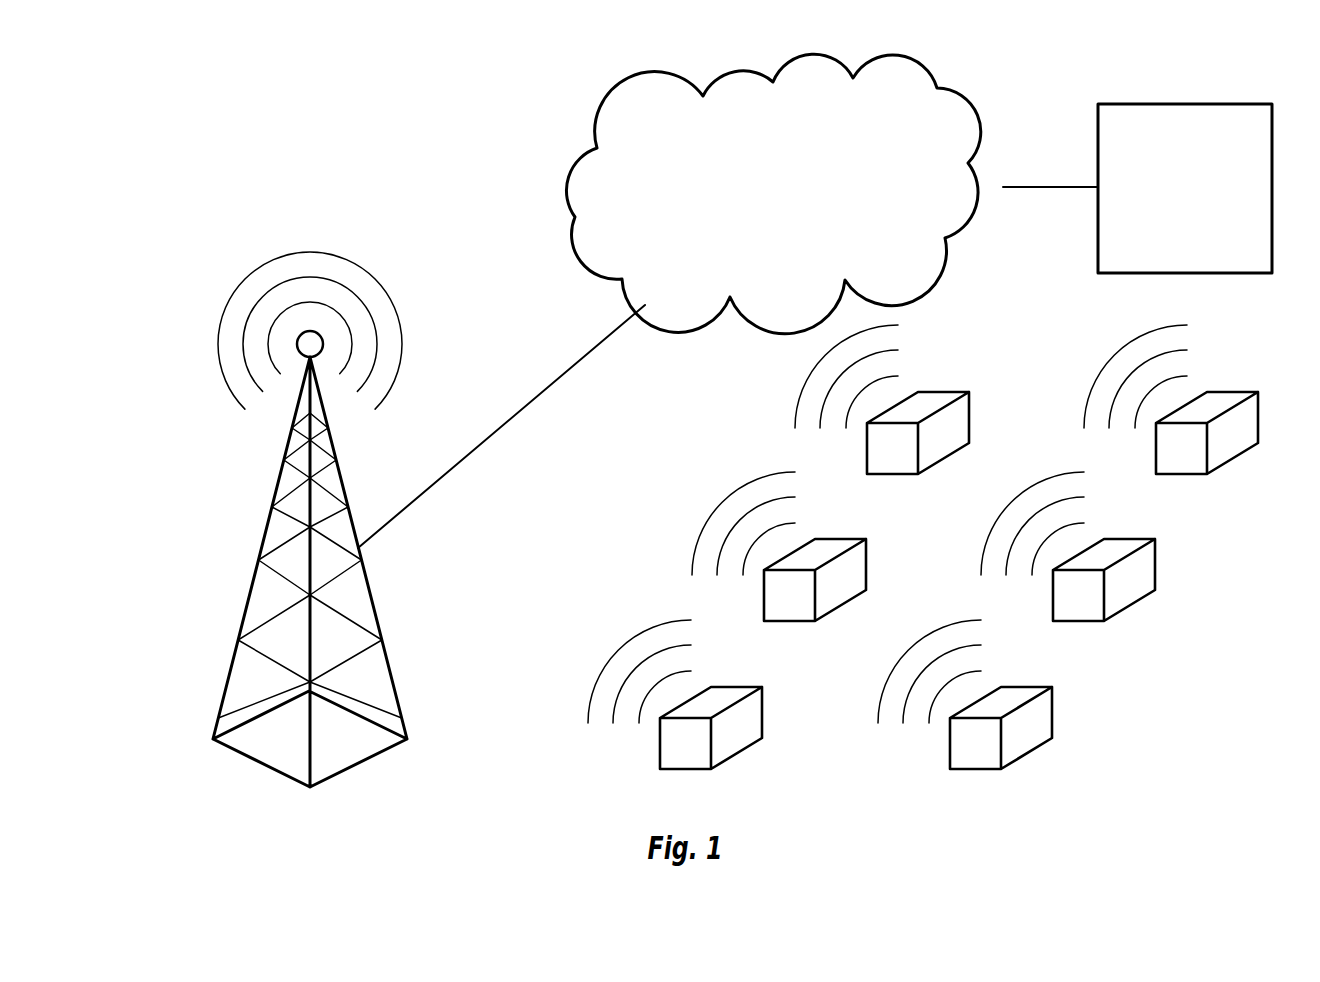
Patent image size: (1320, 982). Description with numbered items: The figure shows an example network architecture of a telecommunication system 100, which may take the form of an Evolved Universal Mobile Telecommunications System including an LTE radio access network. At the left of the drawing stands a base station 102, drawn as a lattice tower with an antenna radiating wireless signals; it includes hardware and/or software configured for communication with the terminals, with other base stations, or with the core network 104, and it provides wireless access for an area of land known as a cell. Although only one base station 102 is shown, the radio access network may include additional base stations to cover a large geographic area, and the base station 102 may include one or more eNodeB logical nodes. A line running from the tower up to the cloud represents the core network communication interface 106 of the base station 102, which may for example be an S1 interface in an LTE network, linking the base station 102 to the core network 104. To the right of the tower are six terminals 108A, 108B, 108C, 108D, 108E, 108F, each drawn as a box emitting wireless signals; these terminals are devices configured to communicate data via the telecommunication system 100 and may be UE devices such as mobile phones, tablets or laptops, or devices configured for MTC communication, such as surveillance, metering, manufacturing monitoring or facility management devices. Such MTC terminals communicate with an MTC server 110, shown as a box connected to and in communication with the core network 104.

The telecommunication system 100 is at (220, 143).
The base station 102 is at (263, 539).
The core network 104 is at (789, 215).
The core network communication interface 106 is at (533, 398).
The terminal 108A is at (840, 539).
The terminal 108B is at (1129, 539).
The terminal 108C is at (736, 687).
The terminal 108D is at (1026, 687).
The terminal 108E is at (943, 392).
The terminal 108F is at (1232, 392).
The MTC server 110 is at (1168, 231).